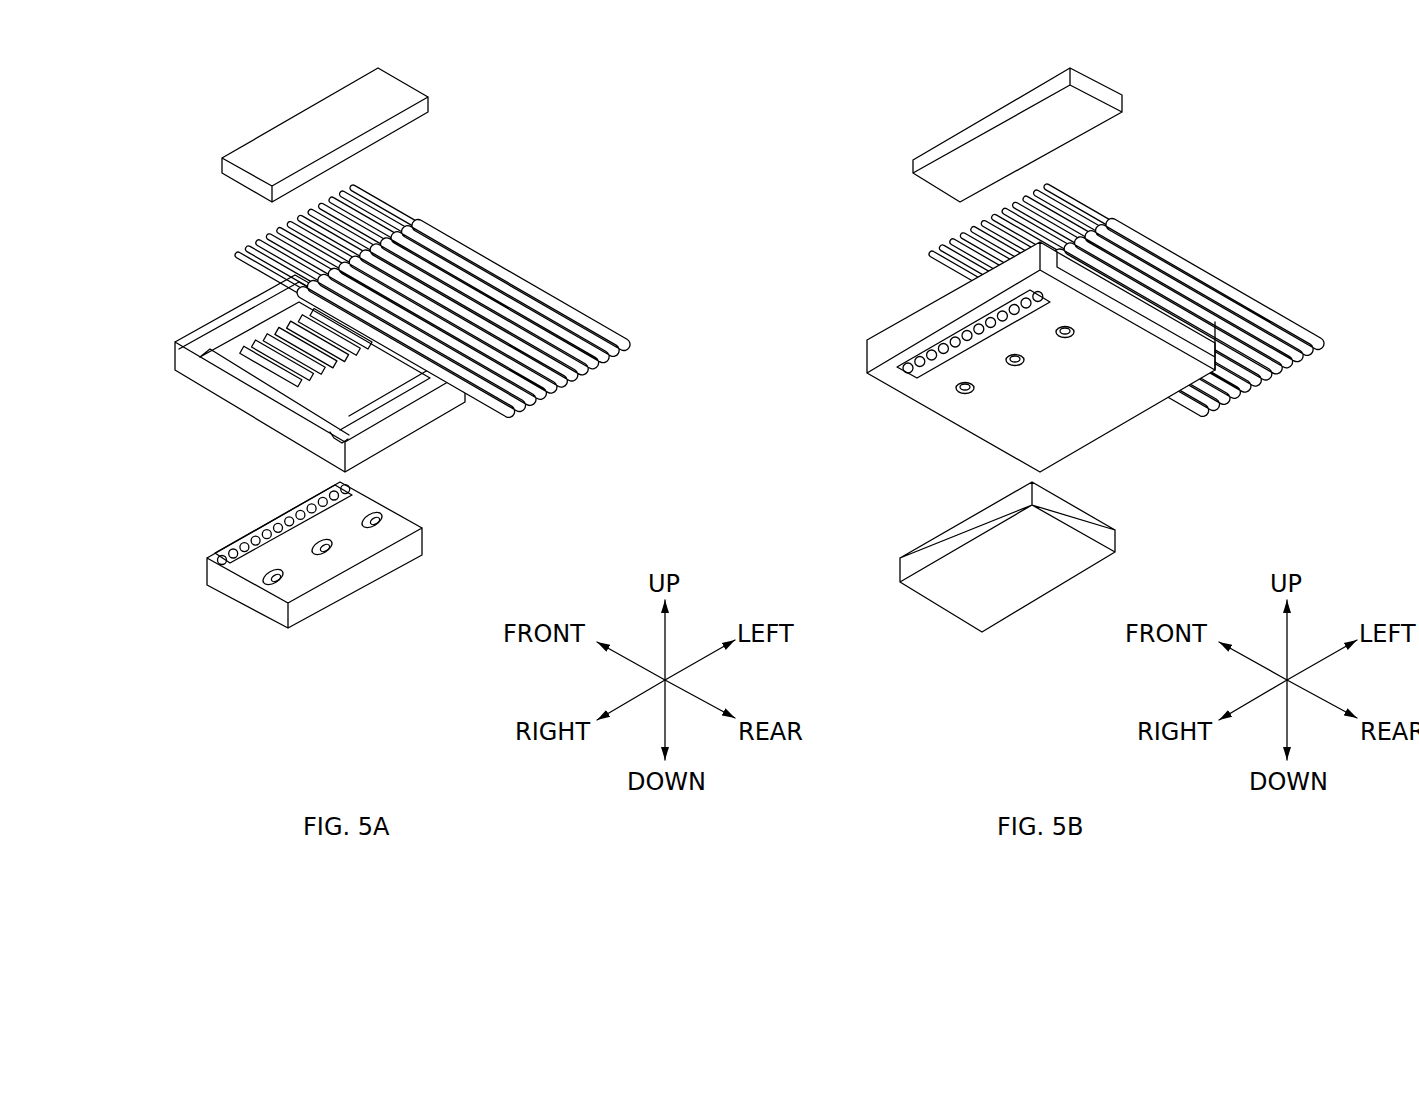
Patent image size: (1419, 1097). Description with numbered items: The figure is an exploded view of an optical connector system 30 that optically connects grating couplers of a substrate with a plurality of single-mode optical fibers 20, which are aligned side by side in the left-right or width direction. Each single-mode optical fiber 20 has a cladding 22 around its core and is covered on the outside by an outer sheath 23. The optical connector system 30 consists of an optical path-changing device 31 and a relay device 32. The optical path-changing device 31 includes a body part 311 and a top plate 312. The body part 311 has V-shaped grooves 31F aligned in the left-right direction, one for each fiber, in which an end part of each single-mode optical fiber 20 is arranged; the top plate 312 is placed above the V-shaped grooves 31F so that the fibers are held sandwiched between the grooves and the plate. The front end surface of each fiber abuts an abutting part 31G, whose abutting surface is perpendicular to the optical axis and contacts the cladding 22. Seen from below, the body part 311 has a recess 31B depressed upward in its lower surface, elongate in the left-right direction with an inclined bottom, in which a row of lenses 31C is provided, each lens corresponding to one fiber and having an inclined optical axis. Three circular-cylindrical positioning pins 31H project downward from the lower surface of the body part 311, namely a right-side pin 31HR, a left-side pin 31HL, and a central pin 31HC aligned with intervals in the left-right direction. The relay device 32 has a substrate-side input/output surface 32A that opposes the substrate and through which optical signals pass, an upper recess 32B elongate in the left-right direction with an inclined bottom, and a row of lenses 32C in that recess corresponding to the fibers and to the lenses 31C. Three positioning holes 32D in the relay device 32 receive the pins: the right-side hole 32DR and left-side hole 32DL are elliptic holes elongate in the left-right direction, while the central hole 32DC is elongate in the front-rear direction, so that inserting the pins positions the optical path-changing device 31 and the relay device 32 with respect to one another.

In FIG. 5A, the single-mode optical fiber 20 is at (432, 285).
In FIG. 5B, the single-mode optical fiber 20 is at (1126, 285).
In FIG. 5A, the cladding 22 is at (385, 205).
In FIG. 5B, the cladding 22 is at (1075, 205).
In FIG. 5A, the outer sheath 23 is at (525, 290).
In FIG. 5B, the outer sheath 23 is at (1220, 290).
In FIG. 5A, the optical connector system 30 is at (342, 401).
In FIG. 5B, the optical connector system 30 is at (1056, 380).
In FIG. 5A, the optical path-changing device 31 is at (298, 271).
In FIG. 5B, the optical path-changing device 31 is at (1074, 312).
In FIG. 5A, the body part 311 is at (321, 342).
In FIG. 5B, the body part 311 is at (1097, 383).
In FIG. 5A, the top plate 312 is at (222, 165).
In FIG. 5B, the top plate 312 is at (914, 165).
In FIG. 5A, the abutting part 31G is at (252, 345).
In FIG. 5A, the V-shaped grooves 31F is at (322, 358).
In FIG. 5B, the recess 31B is at (915, 375).
In FIG. 5B, the lenses 31C is at (930, 346).
In FIG. 5B, the positioning pins 31H is at (1163, 442).
In FIG. 5B, the left-side pin 31HL is at (1067, 340).
In FIG. 5B, the central pin 31HC is at (1017, 368).
In FIG. 5B, the right-side pin 31HR is at (967, 395).
In FIG. 5A, the relay device 32 is at (322, 590).
In FIG. 5B, the relay device 32 is at (988, 586).
In FIG. 5B, the substrate-side input/output surface 32A is at (946, 608).
In FIG. 5A, the recess 32B is at (272, 518).
In FIG. 5A, the lenses 32C is at (228, 540).
In FIG. 5A, the positioning holes 32D is at (371, 622).
In FIG. 5A, the left-side hole 32DL is at (282, 582).
In FIG. 5A, the central hole 32DC is at (333, 552).
In FIG. 5A, the right-side hole 32DR is at (408, 571).